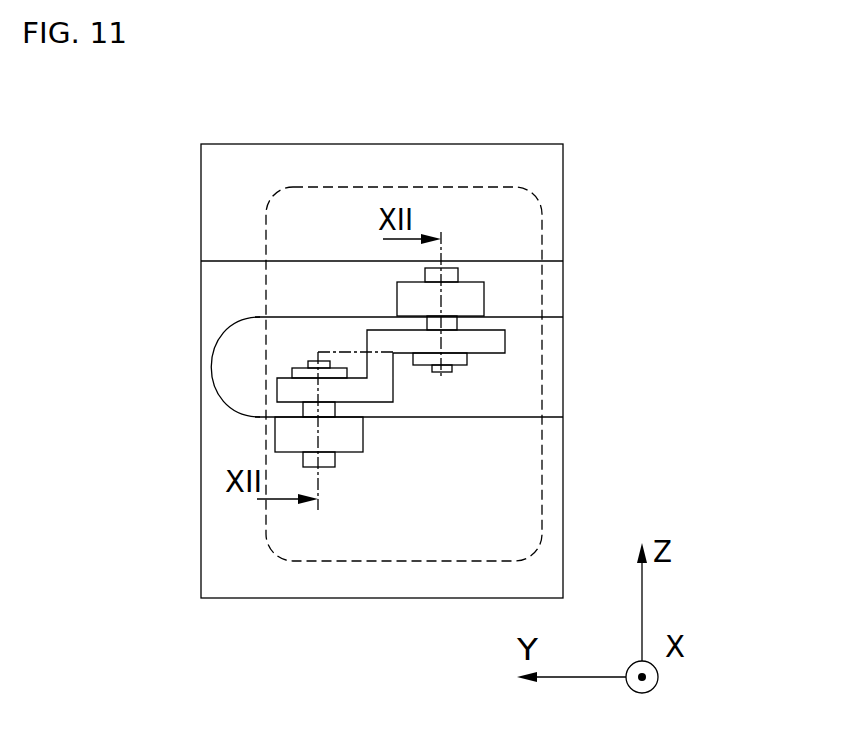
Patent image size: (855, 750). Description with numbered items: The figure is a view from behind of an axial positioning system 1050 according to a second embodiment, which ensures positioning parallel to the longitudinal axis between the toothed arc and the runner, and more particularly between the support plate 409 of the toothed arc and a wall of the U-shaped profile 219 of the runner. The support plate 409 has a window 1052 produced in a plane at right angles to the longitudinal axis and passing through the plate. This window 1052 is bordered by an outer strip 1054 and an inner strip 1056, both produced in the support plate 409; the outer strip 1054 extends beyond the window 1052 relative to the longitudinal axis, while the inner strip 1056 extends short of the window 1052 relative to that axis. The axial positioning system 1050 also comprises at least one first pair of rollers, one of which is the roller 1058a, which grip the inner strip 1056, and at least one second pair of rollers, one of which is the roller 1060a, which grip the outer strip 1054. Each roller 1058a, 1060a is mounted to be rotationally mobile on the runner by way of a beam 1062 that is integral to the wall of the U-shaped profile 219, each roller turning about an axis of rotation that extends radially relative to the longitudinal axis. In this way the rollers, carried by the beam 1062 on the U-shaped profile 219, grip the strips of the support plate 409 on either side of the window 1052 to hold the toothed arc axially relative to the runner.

The U-shaped profile 219 is at (518, 151).
The axial positioning system 1050 is at (160, 199).
The outer strip 1054 is at (313, 287).
The support plate 409 is at (520, 296).
The inner strip 1056 is at (480, 437).
The window 1052 is at (223, 363).
The beam 1062 is at (492, 342).
The roller of the second pair 1060a is at (467, 300).
The roller of the first pair 1058a is at (290, 433).